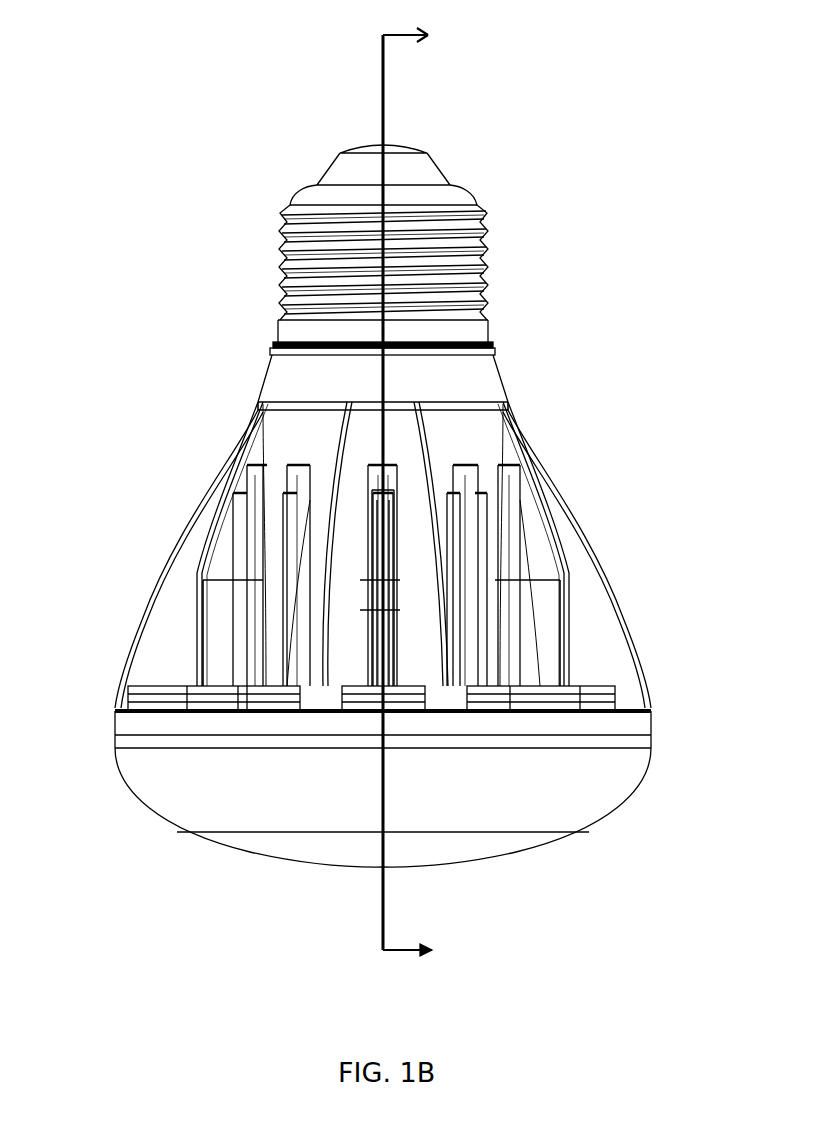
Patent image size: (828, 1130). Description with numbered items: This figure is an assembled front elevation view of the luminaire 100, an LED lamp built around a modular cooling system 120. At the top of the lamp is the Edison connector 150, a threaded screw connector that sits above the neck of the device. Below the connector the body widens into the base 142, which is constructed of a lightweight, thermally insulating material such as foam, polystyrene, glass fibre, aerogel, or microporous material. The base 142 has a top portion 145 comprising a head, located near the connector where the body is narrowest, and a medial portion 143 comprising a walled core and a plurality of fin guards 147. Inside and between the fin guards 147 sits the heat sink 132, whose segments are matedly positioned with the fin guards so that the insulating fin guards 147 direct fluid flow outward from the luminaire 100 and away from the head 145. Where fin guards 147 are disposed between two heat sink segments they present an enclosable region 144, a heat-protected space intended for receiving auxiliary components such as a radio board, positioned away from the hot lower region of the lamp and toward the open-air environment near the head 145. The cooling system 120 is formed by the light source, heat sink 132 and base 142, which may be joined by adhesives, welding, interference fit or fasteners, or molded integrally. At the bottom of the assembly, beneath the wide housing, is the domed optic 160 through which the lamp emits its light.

The luminaire 100 is at (154, 124).
The modular cooling system 120 is at (599, 355).
The heat sink 132 is at (372, 548).
The base 142 is at (625, 613).
The medial portion 143 is at (485, 447).
The enclosable region 144 is at (275, 630).
The top portion 145 is at (515, 622).
The fin guards 147 is at (318, 635).
The Edison connector 150 is at (450, 185).
The optic 160 is at (262, 843).